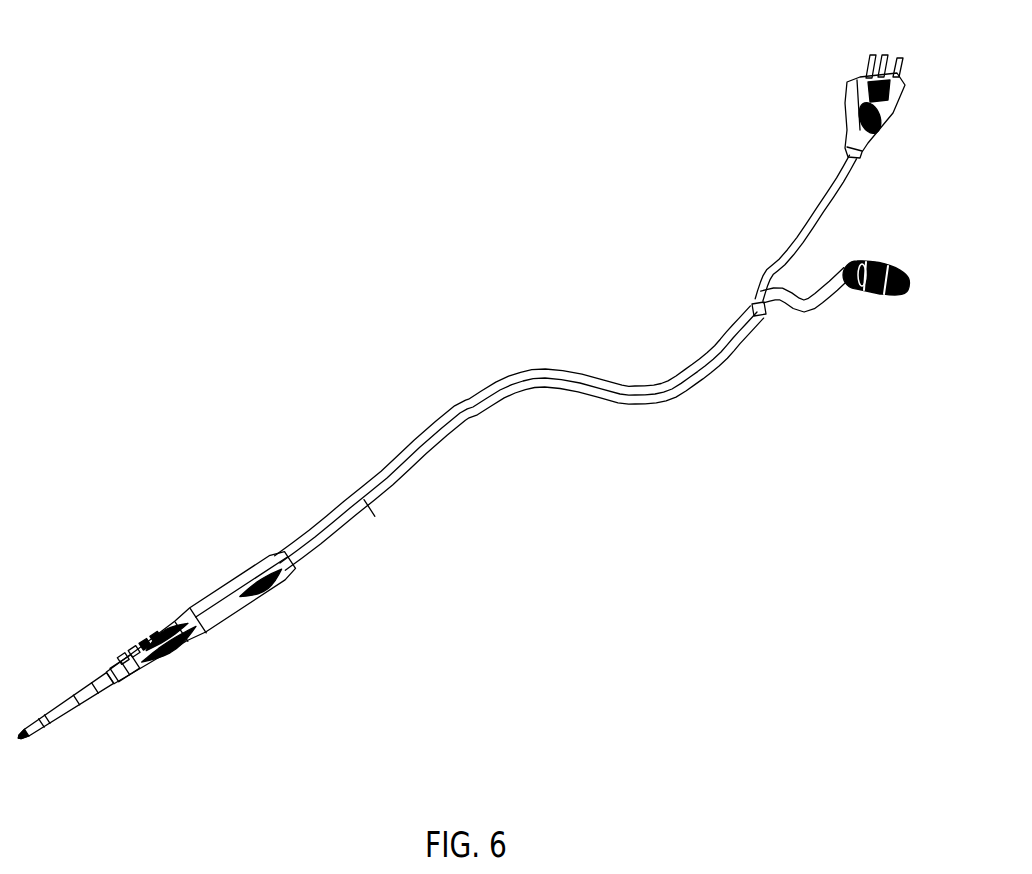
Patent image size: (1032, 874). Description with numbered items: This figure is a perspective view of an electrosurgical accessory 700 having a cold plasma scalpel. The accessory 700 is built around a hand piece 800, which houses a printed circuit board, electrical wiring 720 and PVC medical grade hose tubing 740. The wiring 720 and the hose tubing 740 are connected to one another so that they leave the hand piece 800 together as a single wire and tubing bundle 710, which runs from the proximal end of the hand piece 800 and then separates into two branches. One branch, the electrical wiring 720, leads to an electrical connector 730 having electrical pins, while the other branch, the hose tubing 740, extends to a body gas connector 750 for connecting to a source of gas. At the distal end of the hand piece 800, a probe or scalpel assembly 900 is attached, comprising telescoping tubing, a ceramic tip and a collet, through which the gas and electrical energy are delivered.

The accessory 700 is at (232, 134).
The wire and tubing bundle 710 is at (512, 378).
The electrical wiring 720 is at (777, 258).
The electrical connector 730 is at (857, 90).
The hose tubing 740 is at (793, 292).
The body gas connector 750 is at (855, 293).
The hand piece 800 is at (205, 612).
The probe or scalpel assembly 900 is at (93, 692).